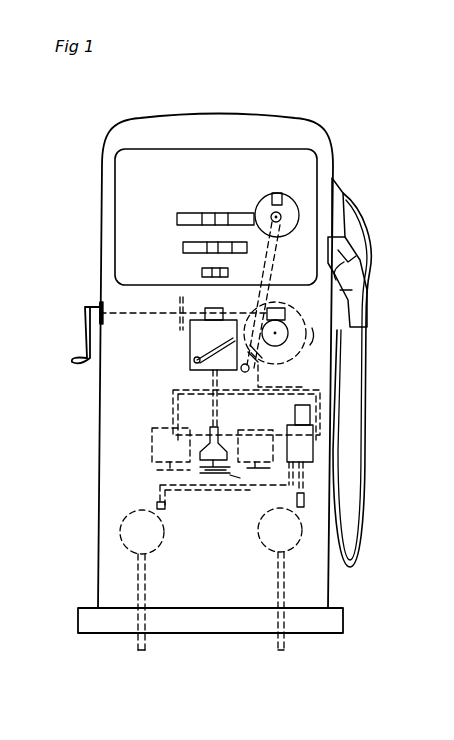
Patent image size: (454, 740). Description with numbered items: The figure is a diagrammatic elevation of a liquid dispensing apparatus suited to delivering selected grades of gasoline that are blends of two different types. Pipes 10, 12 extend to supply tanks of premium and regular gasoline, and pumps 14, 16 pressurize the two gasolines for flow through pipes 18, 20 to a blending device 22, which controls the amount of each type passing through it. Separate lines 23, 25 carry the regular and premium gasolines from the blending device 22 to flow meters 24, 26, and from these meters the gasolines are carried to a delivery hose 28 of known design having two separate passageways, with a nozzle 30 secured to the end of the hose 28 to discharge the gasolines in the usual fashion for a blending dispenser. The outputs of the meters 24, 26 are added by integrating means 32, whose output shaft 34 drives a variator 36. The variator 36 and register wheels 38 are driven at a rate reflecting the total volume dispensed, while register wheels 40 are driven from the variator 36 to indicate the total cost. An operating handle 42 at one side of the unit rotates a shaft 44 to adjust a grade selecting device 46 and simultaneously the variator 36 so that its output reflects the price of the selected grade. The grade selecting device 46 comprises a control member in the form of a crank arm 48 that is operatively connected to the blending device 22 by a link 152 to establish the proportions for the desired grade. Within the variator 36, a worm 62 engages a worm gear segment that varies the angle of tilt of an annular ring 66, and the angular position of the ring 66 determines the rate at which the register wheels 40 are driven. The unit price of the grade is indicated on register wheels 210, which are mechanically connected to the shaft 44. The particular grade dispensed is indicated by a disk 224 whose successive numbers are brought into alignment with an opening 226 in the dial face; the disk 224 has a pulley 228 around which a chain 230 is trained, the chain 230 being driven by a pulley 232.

The pipe 10 is at (146, 648).
The pipe 12 is at (286, 648).
The pump 14 is at (166, 538).
The pump 16 is at (262, 538).
The pipe 18 is at (180, 488).
The pipe 20 is at (297, 500).
The blending device 22 is at (320, 447).
The line 23 is at (173, 405).
The flow meter 24 is at (152, 442).
The line 25 is at (273, 447).
The flow meter 26 is at (245, 430).
The delivery hose 28 is at (362, 210).
The nozzle 30 is at (347, 257).
The integrating means 32 is at (240, 479).
The output shaft 34 is at (212, 420).
The variator 36 is at (190, 352).
The register wheels 38 is at (185, 243).
The register wheels 40 is at (195, 212).
The operating handle 42 is at (85, 337).
The shaft 44 is at (160, 312).
The grade selecting device 46 is at (297, 345).
The crank arm 48 is at (280, 385).
The worm 62 is at (215, 308).
The annular ring 66 is at (190, 367).
The link 152 is at (293, 412).
The register wheels 210 is at (204, 268).
The disk 224 is at (262, 198).
The opening 226 is at (275, 193).
The pulley 228 is at (276, 224).
The chain 230 is at (272, 262).
The pulley 232 is at (252, 360).